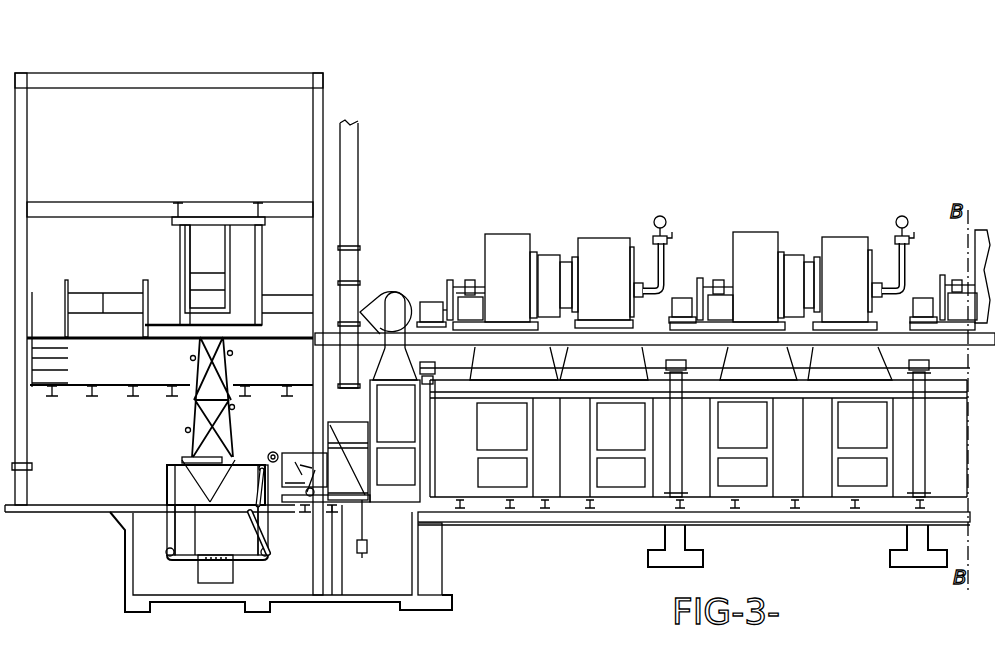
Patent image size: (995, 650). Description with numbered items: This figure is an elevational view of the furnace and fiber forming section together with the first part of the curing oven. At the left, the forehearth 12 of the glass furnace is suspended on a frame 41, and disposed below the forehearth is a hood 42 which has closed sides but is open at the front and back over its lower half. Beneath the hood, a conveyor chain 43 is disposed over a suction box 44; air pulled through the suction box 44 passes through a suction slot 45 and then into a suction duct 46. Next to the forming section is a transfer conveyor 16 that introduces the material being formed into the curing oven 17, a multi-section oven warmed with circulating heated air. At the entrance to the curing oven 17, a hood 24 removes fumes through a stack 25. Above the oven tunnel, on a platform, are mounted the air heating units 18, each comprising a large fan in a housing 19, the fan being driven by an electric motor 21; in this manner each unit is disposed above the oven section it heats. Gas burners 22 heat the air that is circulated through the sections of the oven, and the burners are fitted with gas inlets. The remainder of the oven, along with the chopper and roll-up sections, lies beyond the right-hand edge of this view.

The forehearth 12 is at (195, 280).
The transfer conveyor 16 is at (292, 455).
The curing oven 17 is at (577, 493).
The air heating unit 18 is at (565, 239).
The housing 19 is at (488, 243).
The electric motor 21 is at (433, 302).
The gas burner 22 is at (638, 277).
The exhaust hood 24 is at (385, 362).
The stack 25 is at (360, 182).
The frame 41 is at (182, 238).
The hood 42 is at (193, 365).
The conveyor chain 43 is at (167, 480).
The suction box 44 is at (212, 477).
The suction slot 45 is at (215, 497).
The suction duct 46 is at (200, 572).